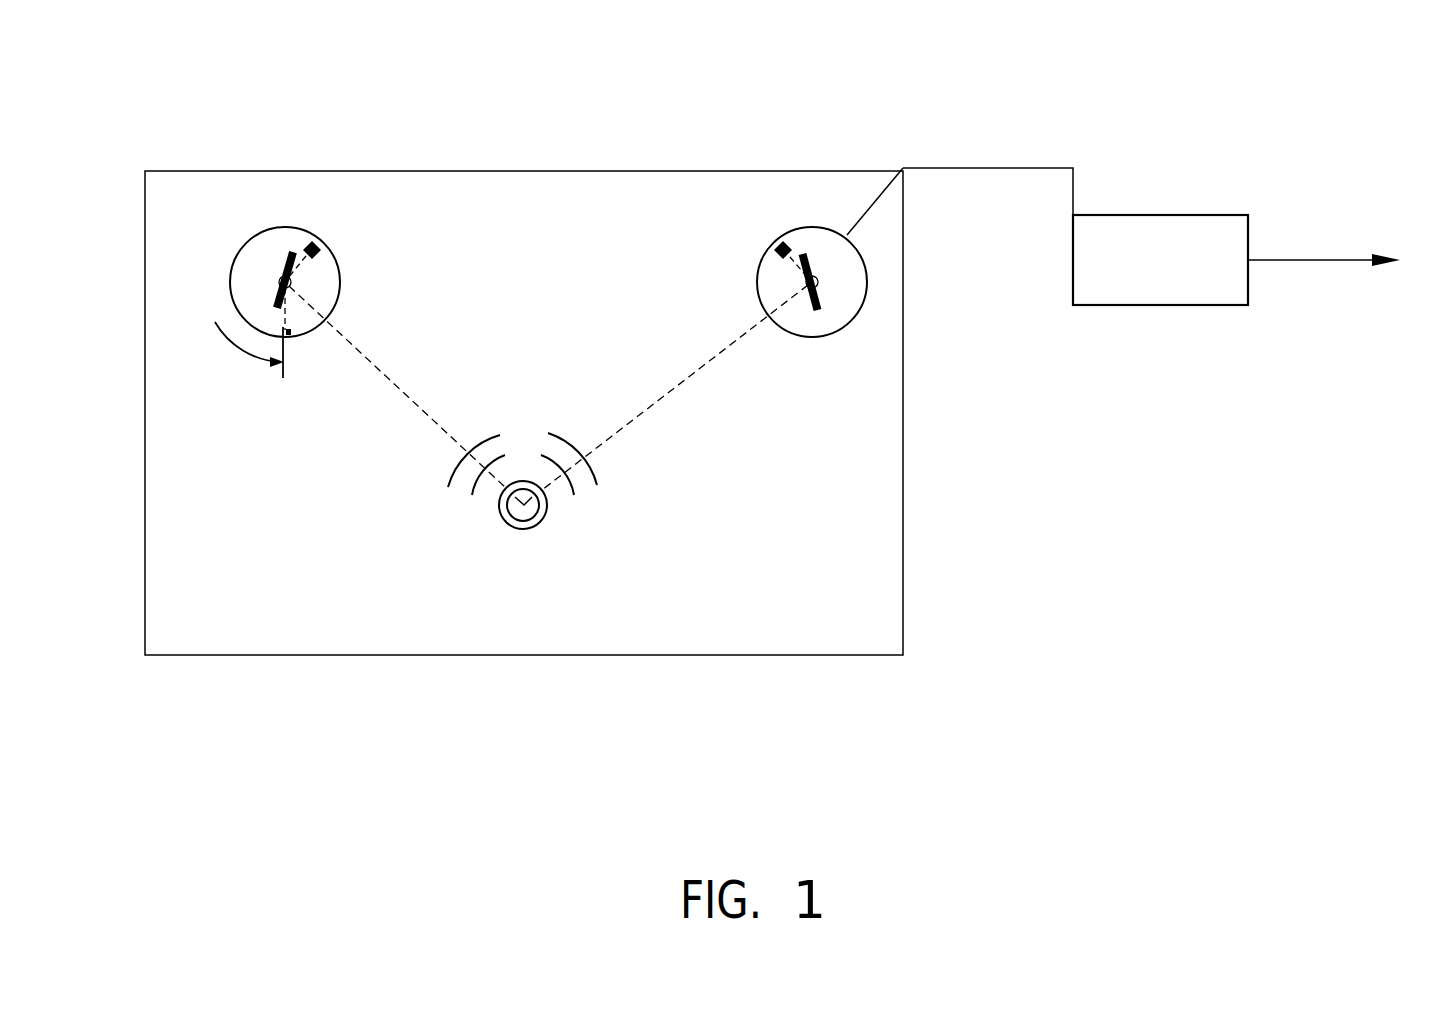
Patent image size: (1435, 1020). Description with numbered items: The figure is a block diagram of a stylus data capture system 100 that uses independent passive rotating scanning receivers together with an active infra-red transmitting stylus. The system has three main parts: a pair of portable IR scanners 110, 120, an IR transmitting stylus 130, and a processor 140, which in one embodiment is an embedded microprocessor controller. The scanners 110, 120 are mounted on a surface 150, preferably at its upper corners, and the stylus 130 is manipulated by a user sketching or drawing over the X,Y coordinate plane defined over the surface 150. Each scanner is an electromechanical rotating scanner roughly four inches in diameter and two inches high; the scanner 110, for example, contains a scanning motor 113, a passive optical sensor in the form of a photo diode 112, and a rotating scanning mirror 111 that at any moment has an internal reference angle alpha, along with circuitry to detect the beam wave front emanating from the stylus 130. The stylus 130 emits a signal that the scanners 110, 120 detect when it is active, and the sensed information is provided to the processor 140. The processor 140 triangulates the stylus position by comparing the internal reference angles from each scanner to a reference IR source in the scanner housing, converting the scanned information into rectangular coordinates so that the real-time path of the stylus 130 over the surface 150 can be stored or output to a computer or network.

The stylus data capture system 100 is at (187, 72).
The scanner 110 is at (290, 304).
The rotating scanning mirror 111 is at (290, 252).
The photo diode 112 is at (318, 252).
The scanning motor 113 is at (247, 238).
The scanner 120 is at (747, 257).
The IR transmitting stylus 130 is at (503, 525).
The processor 140 is at (1073, 283).
The surface 150 is at (903, 585).